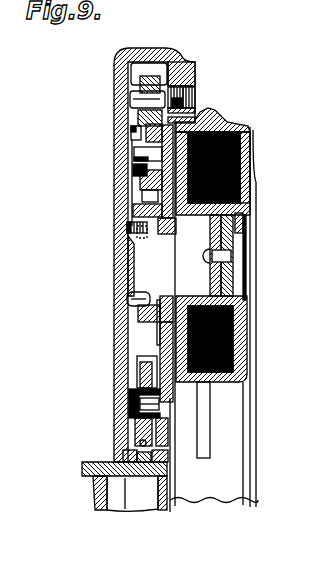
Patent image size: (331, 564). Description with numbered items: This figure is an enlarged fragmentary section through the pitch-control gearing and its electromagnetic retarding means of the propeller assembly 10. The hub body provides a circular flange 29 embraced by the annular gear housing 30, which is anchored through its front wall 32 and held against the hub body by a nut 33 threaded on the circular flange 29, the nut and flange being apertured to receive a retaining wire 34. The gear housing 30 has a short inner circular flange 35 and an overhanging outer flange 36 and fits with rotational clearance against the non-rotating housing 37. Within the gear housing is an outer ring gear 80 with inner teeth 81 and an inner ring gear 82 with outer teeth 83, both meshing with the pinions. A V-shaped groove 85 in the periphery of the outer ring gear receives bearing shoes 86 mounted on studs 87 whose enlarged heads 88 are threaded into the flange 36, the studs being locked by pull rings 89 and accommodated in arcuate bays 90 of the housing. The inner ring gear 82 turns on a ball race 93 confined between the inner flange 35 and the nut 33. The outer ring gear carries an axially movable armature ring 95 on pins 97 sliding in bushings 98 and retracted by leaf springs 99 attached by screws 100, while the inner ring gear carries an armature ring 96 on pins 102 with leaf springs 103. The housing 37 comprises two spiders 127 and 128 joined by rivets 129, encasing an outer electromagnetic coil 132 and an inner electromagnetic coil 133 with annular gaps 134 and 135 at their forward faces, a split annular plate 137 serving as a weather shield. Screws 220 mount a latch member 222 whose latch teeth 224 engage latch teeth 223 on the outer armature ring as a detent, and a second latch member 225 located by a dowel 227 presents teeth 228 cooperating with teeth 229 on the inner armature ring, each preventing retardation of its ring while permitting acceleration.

The fluid flow direction arrow 10 is at (140, 48).
The circular flange 29 is at (118, 506).
The gear housing 30 is at (124, 73).
The front wall 32 is at (129, 404).
The nut 33 is at (170, 461).
The retaining wire 34 is at (168, 508).
The inner circular flange 35 is at (100, 470).
The outer flange 36 is at (189, 71).
The housing 37 is at (254, 134).
The outer ring gear 80 is at (180, 197).
The inner teeth 81 is at (150, 206).
The inner ring gear 82 is at (168, 432).
The outer teeth 83 is at (143, 362).
The groove 85 is at (134, 125).
The bearing shoes 86 is at (162, 65).
The studs 87 is at (140, 100).
The enlarged heads 88 is at (193, 79).
The pull rings 89 is at (195, 99).
The arcuate bays 90 is at (152, 82).
The ball race 93 is at (142, 490).
The outer armature ring 95 is at (232, 240).
The inner armature ring 96 is at (163, 350).
The pins 97 is at (143, 180).
The bushings 98 is at (138, 140).
The leaf springs 99 is at (137, 153).
The screw 100 is at (135, 163).
The pins 102 is at (135, 420).
The leaf springs 103 is at (135, 390).
The spider 127 is at (246, 210).
The spider 128 is at (215, 265).
The rivets 129 is at (232, 257).
The outer electromagnetic coil 132 is at (252, 160).
The inner electromagnetic coil 133 is at (238, 342).
The annular gap 134 is at (217, 123).
The annular gap 135 is at (248, 378).
The split annular plate 137 is at (247, 290).
The screws 220 is at (132, 240).
The latch member 222 is at (124, 224).
The latch teeth 223 is at (248, 181).
The latch teeth 224 is at (168, 222).
The second latch member 225 is at (136, 306).
The dowel 227 is at (128, 298).
The teeth 228 is at (172, 297).
The teeth 229 is at (160, 328).